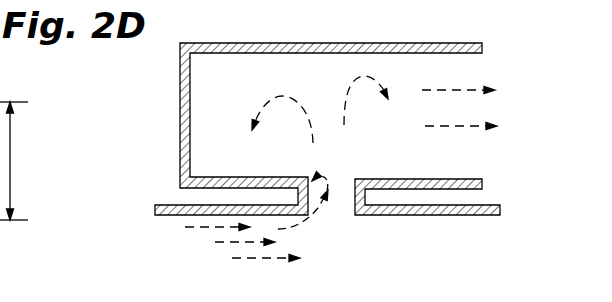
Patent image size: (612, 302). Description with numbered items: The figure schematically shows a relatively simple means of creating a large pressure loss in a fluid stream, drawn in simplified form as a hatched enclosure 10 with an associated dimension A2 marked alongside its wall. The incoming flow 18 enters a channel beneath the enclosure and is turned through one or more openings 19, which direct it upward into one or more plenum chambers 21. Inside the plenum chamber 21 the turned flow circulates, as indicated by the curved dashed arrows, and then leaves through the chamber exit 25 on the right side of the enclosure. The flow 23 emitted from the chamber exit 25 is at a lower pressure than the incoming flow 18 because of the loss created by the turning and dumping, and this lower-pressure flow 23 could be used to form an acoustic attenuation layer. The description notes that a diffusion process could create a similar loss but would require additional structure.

The heating apparatus 10 is at (327, 107).
The flow 18 is at (252, 226).
The openings 19 is at (328, 205).
The plenum chambers 21 is at (244, 162).
The flow 23 is at (459, 108).
The chamber exit 25 is at (458, 78).
The height dimension A2 is at (15, 161).